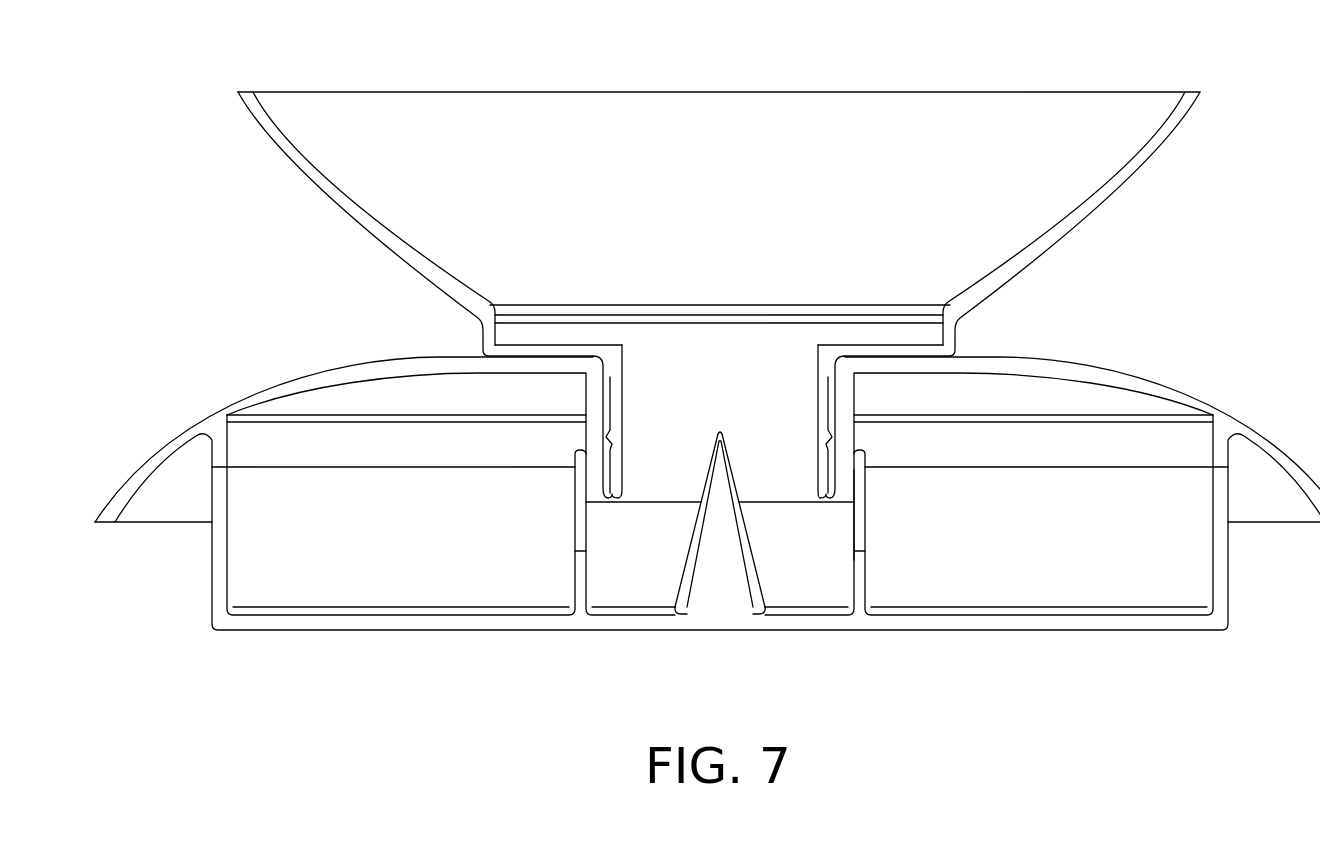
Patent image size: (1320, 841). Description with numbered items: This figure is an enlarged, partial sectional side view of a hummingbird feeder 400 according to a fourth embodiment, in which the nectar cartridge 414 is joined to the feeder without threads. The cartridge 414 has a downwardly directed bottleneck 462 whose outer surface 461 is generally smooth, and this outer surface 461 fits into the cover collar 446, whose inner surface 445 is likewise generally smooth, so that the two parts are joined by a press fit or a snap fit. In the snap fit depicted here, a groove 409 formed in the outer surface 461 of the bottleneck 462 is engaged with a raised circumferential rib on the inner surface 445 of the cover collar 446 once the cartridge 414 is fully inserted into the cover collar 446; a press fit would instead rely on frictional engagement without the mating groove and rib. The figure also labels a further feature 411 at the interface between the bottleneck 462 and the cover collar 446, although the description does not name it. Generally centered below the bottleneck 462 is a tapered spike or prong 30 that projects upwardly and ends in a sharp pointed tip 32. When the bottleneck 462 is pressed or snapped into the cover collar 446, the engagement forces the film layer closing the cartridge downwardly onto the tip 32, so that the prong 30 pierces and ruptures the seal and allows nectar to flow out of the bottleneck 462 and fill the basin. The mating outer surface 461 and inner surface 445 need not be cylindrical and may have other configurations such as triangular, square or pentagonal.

The hummingbird feeder 400 is at (1219, 139).
The cartridge 414 is at (337, 207).
The groove 409 is at (610, 437).
The pointed tip 32 is at (718, 432).
The seal channel 411 is at (822, 438).
The outer surface 461 is at (837, 395).
The cover collar 446 is at (840, 441).
The inner surface 445 is at (835, 470).
The prong 30 is at (718, 592).
The bottleneck 462 is at (777, 482).